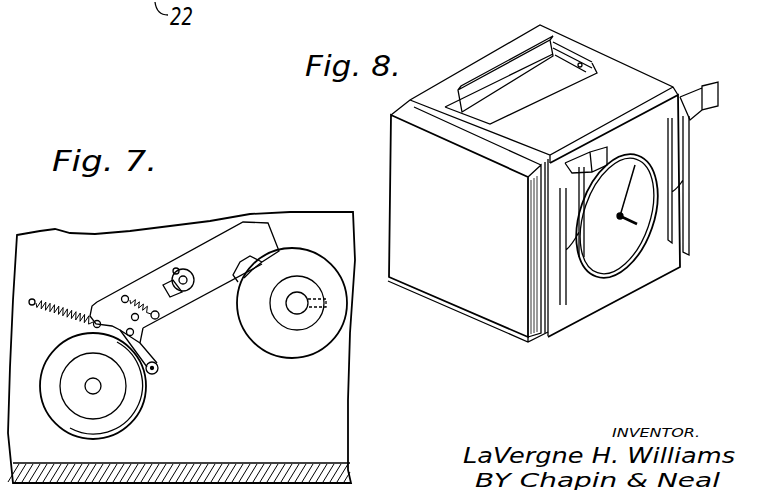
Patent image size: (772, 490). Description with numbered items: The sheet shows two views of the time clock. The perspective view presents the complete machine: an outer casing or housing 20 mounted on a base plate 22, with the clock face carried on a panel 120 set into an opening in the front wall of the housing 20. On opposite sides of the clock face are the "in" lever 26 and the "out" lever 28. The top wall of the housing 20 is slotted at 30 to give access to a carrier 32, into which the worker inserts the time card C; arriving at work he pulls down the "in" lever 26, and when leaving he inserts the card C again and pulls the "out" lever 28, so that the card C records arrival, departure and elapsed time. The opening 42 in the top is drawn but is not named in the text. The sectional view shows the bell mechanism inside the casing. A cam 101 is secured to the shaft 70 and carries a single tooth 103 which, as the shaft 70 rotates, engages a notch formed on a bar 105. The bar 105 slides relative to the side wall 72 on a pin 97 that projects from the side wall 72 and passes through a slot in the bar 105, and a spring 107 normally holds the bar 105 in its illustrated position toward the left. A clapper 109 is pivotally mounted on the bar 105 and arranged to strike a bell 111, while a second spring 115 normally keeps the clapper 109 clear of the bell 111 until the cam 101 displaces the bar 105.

In FIG. 8, the housing 20 is at (401, 135).
In FIG. 7, the base plate 22 is at (240, 464).
In FIG. 8, the base plate 22 is at (507, 330).
In FIG. 8, the in lever 26 is at (568, 219).
In FIG. 8, the out lever 28 is at (682, 148).
In FIG. 8, the slot 30 is at (595, 60).
In FIG. 8, the carrier 32 is at (575, 52).
In FIG. 8, the card opening 42 is at (547, 84).
In FIG. 7, the shaft 70 is at (298, 312).
In FIG. 7, the side wall 72 is at (350, 405).
In FIG. 7, the pin 97 is at (188, 274).
In FIG. 7, the cam 101 is at (347, 319).
In FIG. 7, the tooth 103 is at (256, 268).
In FIG. 7, the bar 105 is at (270, 227).
In FIG. 7, the spring 107 is at (60, 304).
In FIG. 7, the clapper 109 is at (160, 372).
In FIG. 7, the bell 111 is at (133, 413).
In FIG. 7, the spring 115 is at (141, 297).
In FIG. 8, the panel 120 is at (607, 285).
In FIG. 8, the time card C is at (510, 60).